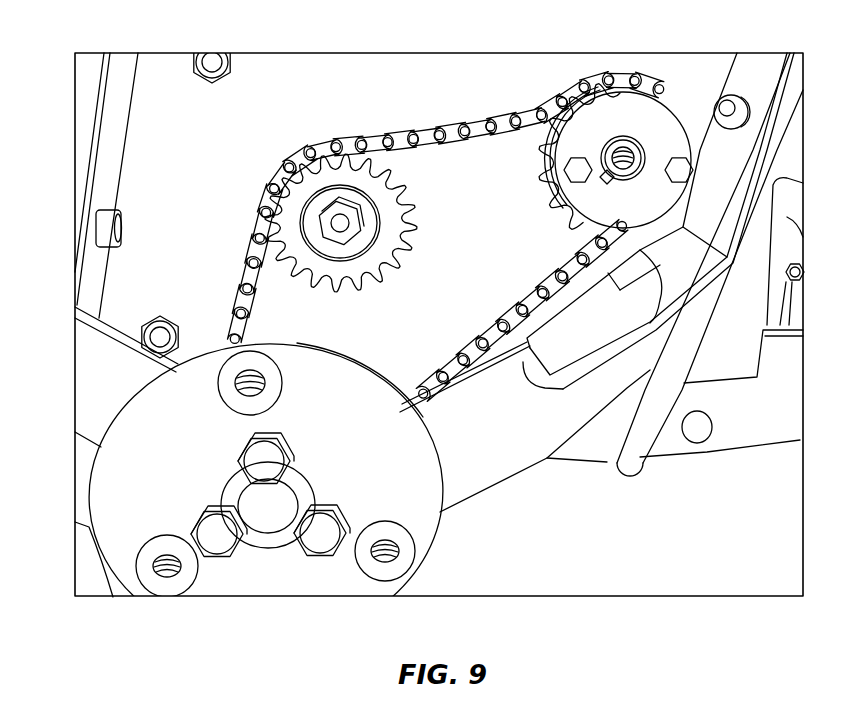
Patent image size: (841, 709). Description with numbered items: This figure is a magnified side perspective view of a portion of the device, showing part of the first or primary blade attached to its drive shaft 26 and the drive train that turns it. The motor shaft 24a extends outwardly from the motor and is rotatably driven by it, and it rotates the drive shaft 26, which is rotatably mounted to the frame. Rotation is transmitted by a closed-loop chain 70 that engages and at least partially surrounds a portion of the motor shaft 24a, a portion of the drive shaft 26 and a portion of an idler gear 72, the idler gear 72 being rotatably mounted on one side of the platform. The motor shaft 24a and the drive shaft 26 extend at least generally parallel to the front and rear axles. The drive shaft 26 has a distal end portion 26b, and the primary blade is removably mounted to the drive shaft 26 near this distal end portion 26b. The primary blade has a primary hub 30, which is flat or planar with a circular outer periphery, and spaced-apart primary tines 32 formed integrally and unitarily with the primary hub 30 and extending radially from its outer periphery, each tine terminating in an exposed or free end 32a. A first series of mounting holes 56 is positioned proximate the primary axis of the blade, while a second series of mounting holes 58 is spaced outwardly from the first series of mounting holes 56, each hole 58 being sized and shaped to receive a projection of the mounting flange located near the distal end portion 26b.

The motor shaft 24a is at (643, 162).
The drive shaft 26 is at (262, 520).
The distal end portion 26b is at (270, 515).
The primary hub 30 is at (420, 520).
The primary tines 32 is at (92, 378).
The exposed or free end 32a is at (598, 238).
The first series of mounting holes 56 is at (240, 462).
The second series of mounting holes 58 is at (168, 588).
The closed-loop chain 70 is at (462, 132).
The idler gear 72 is at (398, 236).